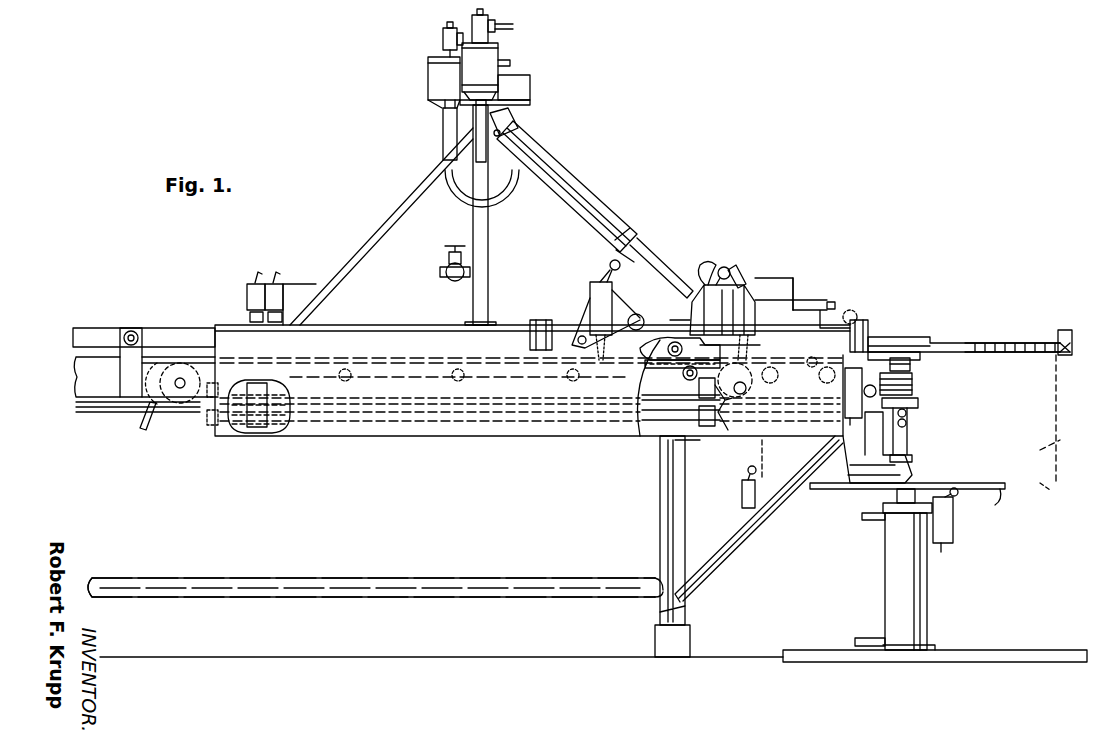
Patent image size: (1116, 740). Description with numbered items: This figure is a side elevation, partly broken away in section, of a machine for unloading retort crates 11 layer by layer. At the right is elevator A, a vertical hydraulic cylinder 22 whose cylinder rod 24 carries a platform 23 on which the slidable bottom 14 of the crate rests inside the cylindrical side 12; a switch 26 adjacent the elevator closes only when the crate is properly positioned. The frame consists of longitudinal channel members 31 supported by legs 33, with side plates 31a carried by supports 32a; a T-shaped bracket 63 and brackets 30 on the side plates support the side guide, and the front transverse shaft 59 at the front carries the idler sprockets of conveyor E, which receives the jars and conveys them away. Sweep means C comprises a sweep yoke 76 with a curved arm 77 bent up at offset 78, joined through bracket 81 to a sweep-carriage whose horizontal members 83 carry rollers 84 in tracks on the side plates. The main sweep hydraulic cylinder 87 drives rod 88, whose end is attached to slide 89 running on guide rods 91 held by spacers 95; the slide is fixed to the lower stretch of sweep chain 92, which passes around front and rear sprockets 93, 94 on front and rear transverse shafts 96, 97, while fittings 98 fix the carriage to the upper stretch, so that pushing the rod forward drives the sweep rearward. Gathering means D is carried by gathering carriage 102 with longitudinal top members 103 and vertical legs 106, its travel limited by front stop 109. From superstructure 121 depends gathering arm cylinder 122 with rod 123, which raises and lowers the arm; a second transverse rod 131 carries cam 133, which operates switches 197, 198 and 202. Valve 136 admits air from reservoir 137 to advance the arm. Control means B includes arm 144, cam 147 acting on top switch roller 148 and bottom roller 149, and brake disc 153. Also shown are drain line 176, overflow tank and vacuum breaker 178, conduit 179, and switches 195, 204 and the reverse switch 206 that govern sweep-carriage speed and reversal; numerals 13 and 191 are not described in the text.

The retort crate 11 is at (1050, 413).
The cylindrical side 12 is at (1062, 453).
The axis 13 is at (668, 320).
The crate bottom 14 is at (1045, 490).
The vertical hydraulic cylinder 22 is at (925, 602).
The platform 23 is at (1000, 495).
The cylinder rod 24 is at (895, 493).
The switch 26 is at (742, 492).
The brackets 30 is at (540, 320).
The channel members 31 is at (76, 374).
The side plates 31a is at (458, 432).
The supports 32a is at (792, 395).
The legs 33 is at (660, 516).
The transverse shaft 59 is at (648, 378).
The T-shaped bracket 63 is at (135, 330).
The sweep yoke 76 is at (995, 331).
The curved arm 77 is at (1071, 348).
The offset 78 is at (1072, 333).
The bracket 81 is at (895, 340).
The horizontal members 83 is at (796, 350).
The rollers 84 is at (655, 342).
The main sweep hydraulic cylinder 87 is at (78, 408).
The rod 88 is at (205, 402).
The slide 89 is at (253, 430).
The guide rods 91 is at (272, 395).
The sweep chain 92 is at (205, 350).
The front sprocket 93 is at (740, 392).
The rear sprocket 94 is at (176, 398).
The spacers 95 is at (210, 425).
The front transverse shaft 96 is at (750, 393).
The rear transverse shaft 97 is at (195, 358).
The fittings 98 is at (735, 348).
The gathering carriage 102 is at (805, 278).
The longitudinal top members 103 is at (772, 278).
The vertical legs 106 is at (805, 300).
The front stop 109 is at (835, 305).
The superstructure 121 is at (470, 152).
The gathering arm cylinder 122 is at (565, 208).
The rod 123 is at (668, 258).
The second transverse rod 131 is at (722, 262).
The cam 133 is at (703, 262).
The valve 136 is at (530, 84).
The reservoir 137 is at (435, 78).
The arm 144 is at (912, 362).
The cam 147 is at (920, 403).
The top switch roller 148 is at (907, 413).
The bottom roller 149 is at (907, 424).
The horizontal brake disc 153 is at (912, 386).
The drain line 176 is at (476, 155).
The overflow tank and vacuum breaker 178 is at (495, 53).
The conduit 179 is at (512, 120).
The latch 191 is at (953, 520).
The switch 195 is at (845, 395).
The contact switch 197 is at (728, 268).
The switch 198 is at (742, 270).
The switch 202 is at (610, 265).
The switch 204 is at (274, 292).
The reverse switch 206 is at (247, 300).
The elevator means A is at (948, 558).
The control means B is at (929, 389).
The sweep means C is at (1032, 328).
The auxiliary gathering means D is at (690, 262).
The horizontal conveyor E is at (118, 318).